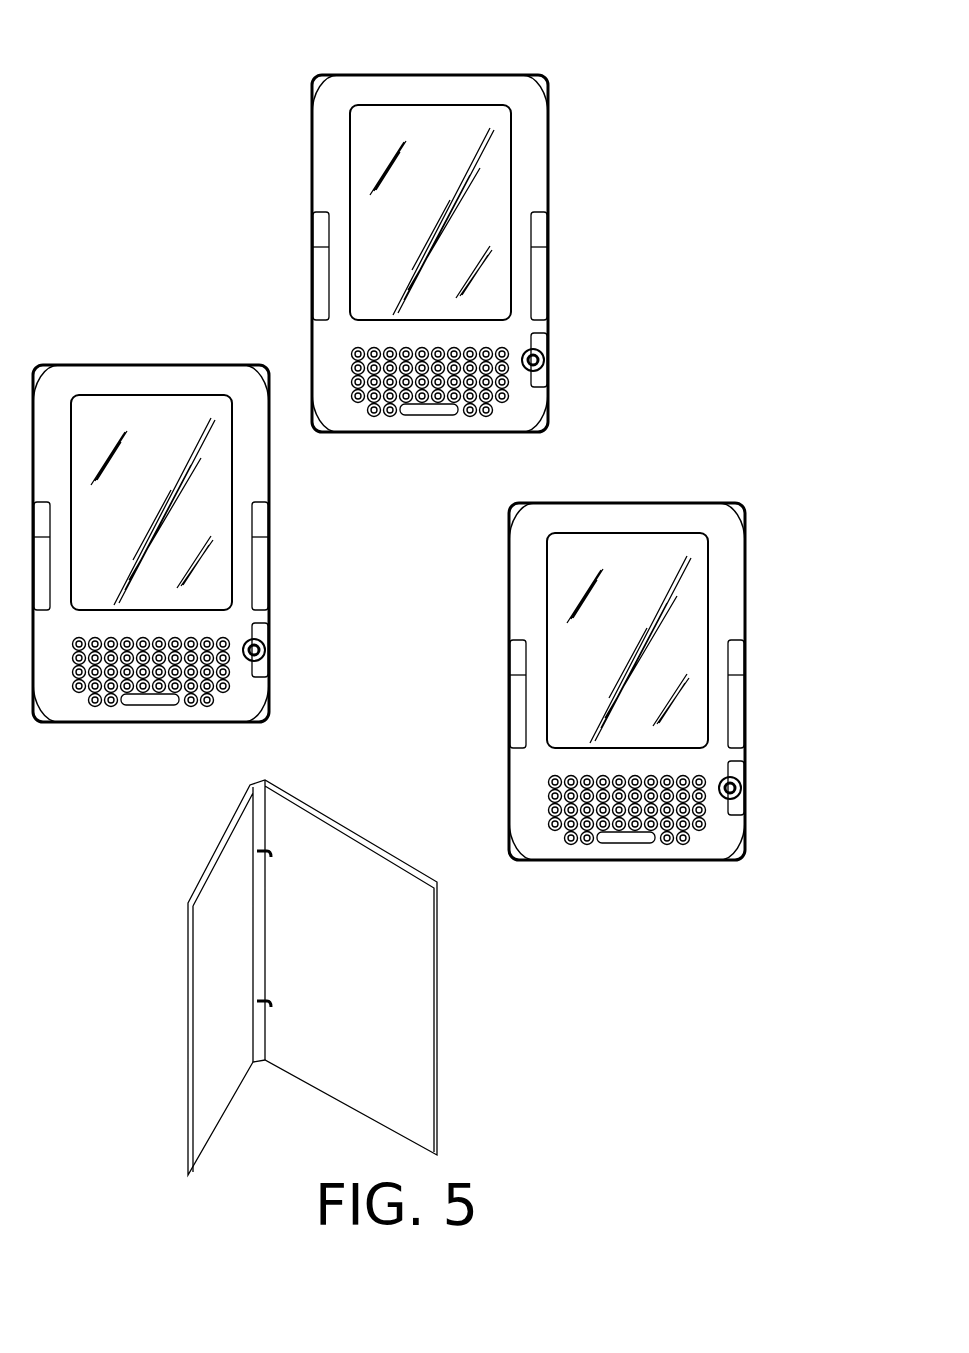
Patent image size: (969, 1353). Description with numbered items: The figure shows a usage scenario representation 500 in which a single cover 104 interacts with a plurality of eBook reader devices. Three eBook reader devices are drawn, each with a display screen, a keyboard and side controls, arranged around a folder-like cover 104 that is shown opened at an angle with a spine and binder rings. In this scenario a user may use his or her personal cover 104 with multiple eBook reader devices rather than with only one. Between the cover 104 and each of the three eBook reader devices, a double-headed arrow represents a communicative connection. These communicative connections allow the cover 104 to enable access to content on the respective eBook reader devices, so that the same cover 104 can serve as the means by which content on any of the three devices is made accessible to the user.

The usage scenario representation 500 is at (648, 92).
The cover 104 is at (148, 1058).